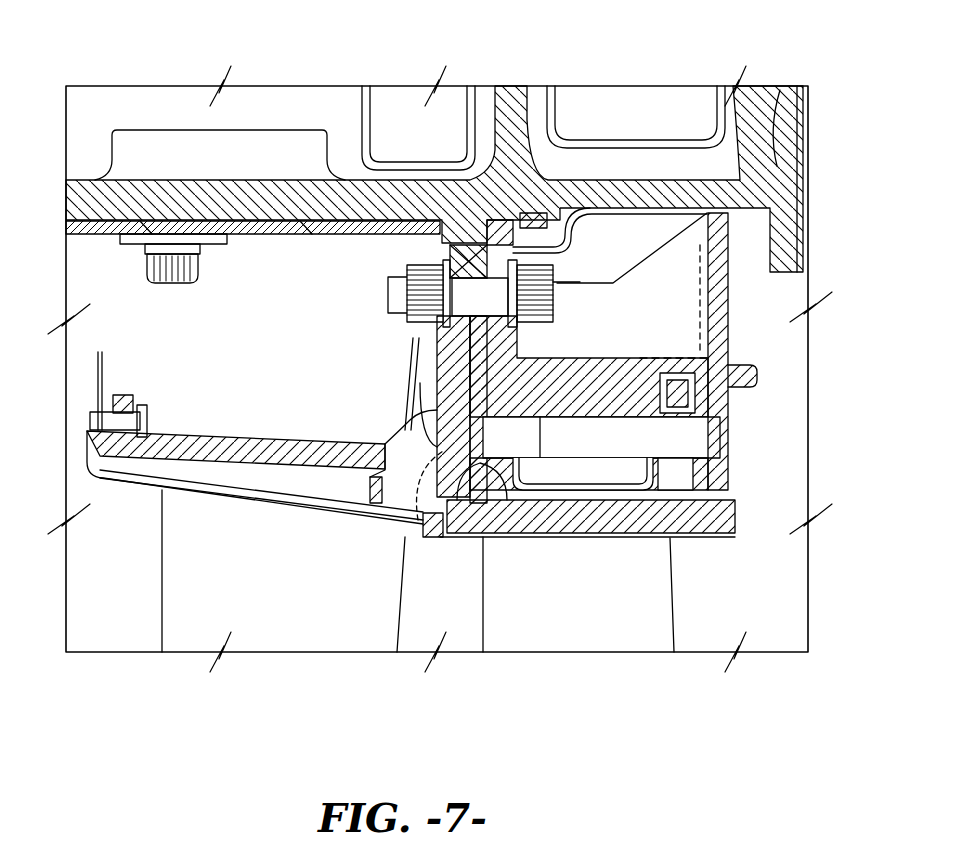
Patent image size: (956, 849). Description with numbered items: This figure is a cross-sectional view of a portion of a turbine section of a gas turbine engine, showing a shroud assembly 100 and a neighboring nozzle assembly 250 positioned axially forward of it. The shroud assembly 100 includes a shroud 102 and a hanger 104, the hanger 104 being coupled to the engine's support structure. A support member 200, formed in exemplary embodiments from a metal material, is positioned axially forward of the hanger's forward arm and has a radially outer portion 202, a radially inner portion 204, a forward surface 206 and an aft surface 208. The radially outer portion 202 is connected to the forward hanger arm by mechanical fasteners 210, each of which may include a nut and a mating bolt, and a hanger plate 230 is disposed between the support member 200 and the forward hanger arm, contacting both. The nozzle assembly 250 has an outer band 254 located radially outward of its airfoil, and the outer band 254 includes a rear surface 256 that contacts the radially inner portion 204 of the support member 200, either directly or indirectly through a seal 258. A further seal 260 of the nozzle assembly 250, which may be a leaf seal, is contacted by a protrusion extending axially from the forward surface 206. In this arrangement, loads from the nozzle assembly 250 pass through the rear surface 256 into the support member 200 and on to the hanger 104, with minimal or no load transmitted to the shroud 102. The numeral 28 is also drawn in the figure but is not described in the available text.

The plate 28 is at (100, 288).
The shroud assembly 100 is at (607, 243).
The shroud 102 is at (590, 540).
The hanger 104 is at (643, 260).
The support member 200 is at (442, 240).
The radially outer portion 202 is at (425, 331).
The radially inner portion 204 is at (445, 485).
The forward surface 206 is at (390, 478).
The aft surface 208 is at (503, 482).
The mechanical fastener 210 is at (410, 260).
The hanger plate 230 is at (470, 240).
The nozzle assembly 250 is at (222, 400).
The outer band 254 is at (327, 430).
The rear surface 256 is at (418, 520).
The seal 258 is at (330, 465).
The seal 260 is at (397, 362).